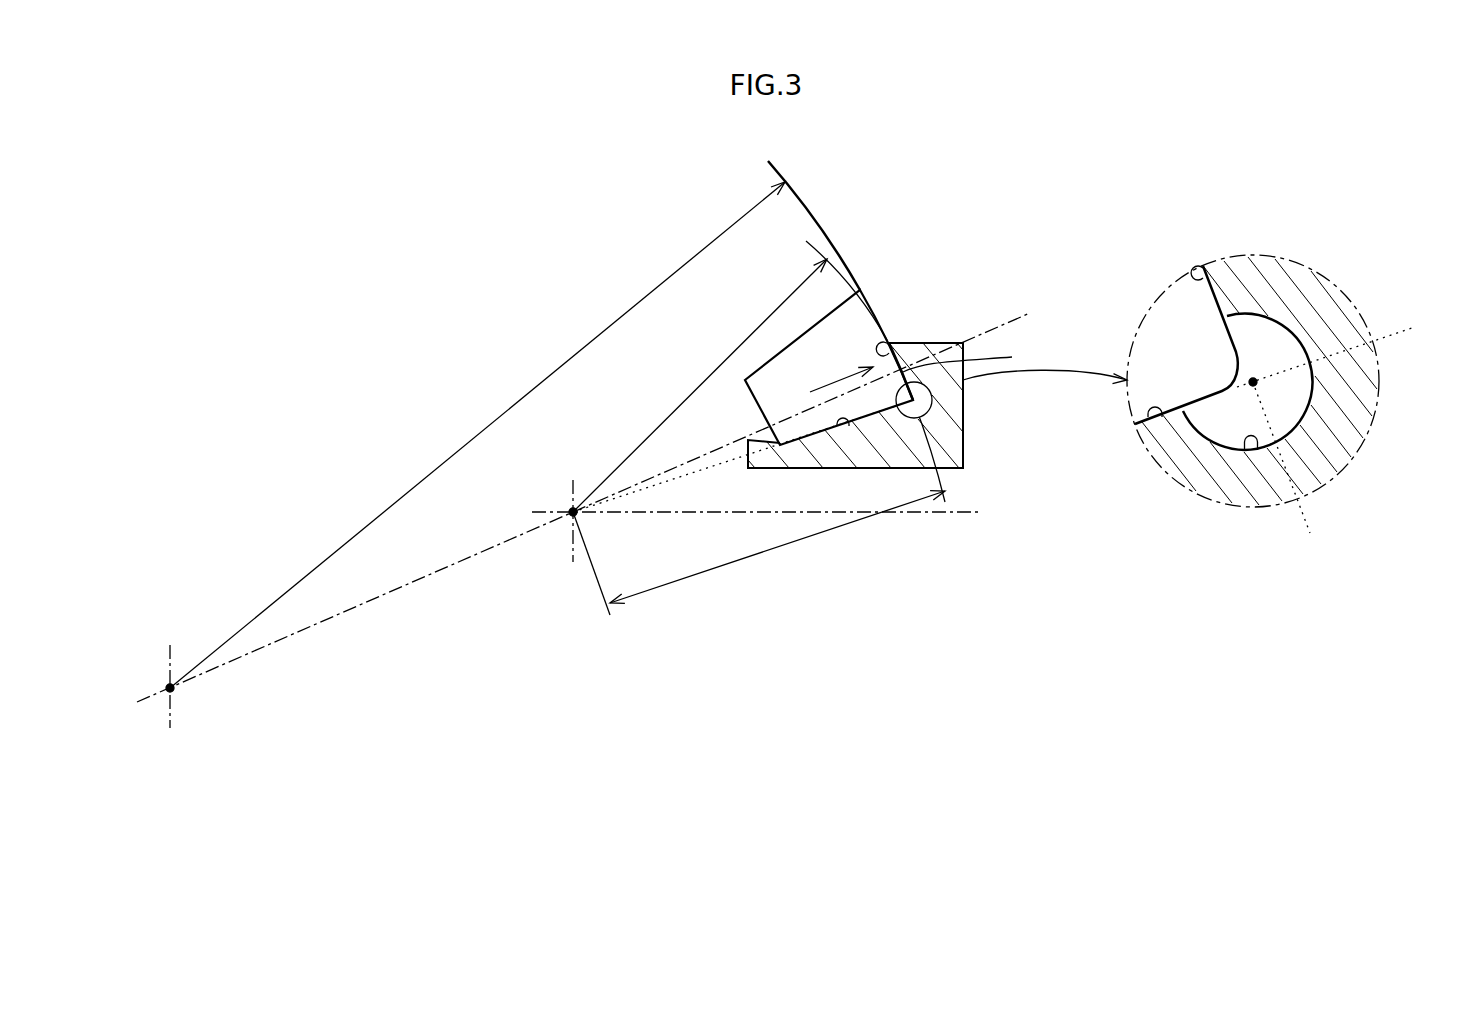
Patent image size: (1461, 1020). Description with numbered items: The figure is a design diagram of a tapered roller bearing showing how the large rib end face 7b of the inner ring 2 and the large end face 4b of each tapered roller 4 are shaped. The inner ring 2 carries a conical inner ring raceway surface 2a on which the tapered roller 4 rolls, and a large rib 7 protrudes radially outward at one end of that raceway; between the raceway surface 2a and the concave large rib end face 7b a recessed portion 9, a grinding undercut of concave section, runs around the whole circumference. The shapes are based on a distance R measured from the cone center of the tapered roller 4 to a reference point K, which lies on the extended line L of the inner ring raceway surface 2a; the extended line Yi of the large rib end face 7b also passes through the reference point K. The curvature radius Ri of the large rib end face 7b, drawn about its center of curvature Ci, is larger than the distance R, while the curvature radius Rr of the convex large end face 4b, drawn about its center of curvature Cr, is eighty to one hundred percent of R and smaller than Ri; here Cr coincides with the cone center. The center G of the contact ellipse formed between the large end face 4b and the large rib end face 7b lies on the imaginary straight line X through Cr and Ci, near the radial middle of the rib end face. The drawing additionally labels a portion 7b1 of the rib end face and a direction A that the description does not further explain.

The inner ring 2 is at (967, 445).
The inner ring raceway surface 2a is at (847, 428).
The tapered roller 4 is at (798, 338).
The large end face 4b is at (866, 298).
The large rib 7 is at (937, 343).
The large rib end face 7b is at (888, 342).
The groove side surface 7b1 is at (910, 345).
The recessed portion 9 is at (1257, 451).
The reference point K is at (935, 407).
The center of contact ellipse G is at (966, 358).
The feed direction A is at (830, 390).
The imaginary straight line X is at (1005, 320).
The extended line of the inner ring raceway surface L is at (1402, 335).
The extended line of the large rib end face Yi is at (1313, 530).
The curvature radius of the large rib end face Ri is at (557, 424).
The curvature radius of the large end face Rr is at (700, 385).
The distance R is at (759, 553).
The center of curvature of the large rib end face Ci is at (167, 685).
The center of curvature of the large end face Cr is at (572, 516).